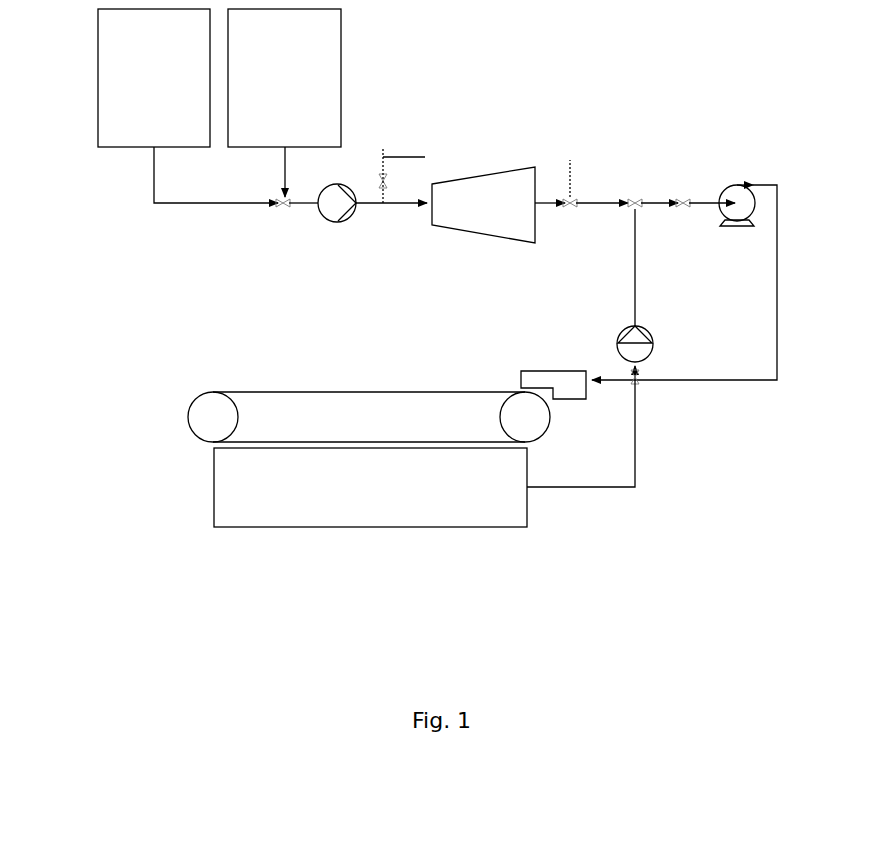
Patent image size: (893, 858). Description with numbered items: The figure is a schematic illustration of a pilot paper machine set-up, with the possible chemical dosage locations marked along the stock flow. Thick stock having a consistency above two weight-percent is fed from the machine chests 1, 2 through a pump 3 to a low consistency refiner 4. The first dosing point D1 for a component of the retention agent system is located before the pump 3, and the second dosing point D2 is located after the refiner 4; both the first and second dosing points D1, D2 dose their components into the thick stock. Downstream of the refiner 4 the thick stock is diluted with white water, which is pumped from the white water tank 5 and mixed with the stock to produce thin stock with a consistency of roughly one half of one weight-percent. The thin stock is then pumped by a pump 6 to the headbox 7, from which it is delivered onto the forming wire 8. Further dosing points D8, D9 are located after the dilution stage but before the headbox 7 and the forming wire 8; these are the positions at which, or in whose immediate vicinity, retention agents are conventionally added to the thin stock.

The machine chest 1 is at (342, 82).
The machine chest 2 is at (97, 88).
The pump 3 is at (325, 225).
The low consistency refiner 4 is at (503, 170).
The white water tank 5 is at (355, 530).
The pump 6 is at (733, 183).
The headbox 7 is at (557, 368).
The forming wire 8 is at (276, 390).
The first dosing point D1 is at (416, 175).
The second dosing point D2 is at (573, 172).
The dosing point D8 is at (703, 380).
The dosing point D9 is at (674, 380).